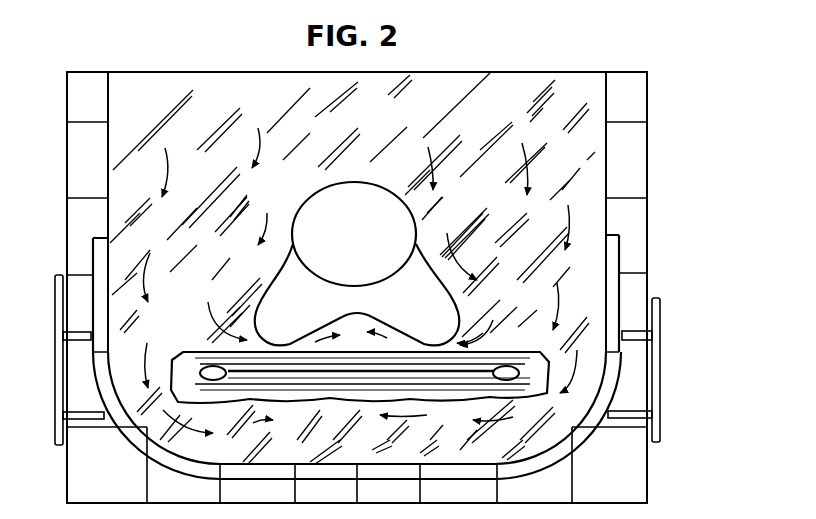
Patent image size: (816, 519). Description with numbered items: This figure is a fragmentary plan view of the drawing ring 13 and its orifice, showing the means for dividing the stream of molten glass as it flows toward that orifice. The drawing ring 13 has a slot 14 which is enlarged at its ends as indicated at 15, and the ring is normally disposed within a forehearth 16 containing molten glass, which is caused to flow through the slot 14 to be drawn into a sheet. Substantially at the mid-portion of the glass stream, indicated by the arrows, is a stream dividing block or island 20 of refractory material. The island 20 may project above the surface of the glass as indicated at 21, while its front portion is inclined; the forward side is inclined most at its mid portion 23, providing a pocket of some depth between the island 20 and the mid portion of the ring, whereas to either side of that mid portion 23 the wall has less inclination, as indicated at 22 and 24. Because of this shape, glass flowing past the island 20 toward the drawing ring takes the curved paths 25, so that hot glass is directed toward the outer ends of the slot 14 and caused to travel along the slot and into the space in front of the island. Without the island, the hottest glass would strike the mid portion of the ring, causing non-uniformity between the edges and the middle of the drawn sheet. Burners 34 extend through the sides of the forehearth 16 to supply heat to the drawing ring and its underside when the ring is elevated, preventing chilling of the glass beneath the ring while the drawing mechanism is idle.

The drawing ring 13 is at (330, 398).
The slot 14 is at (443, 374).
The enlarged ends of slot 15 is at (213, 368).
The forehearth 16 is at (637, 213).
The stream dividing block or island 20 is at (340, 184).
The projecting portion of island 21 is at (352, 211).
The inclined side portion of island 22 is at (295, 290).
The inclined mid portion of island 23 is at (352, 298).
The inclined side portion of island 24 is at (414, 296).
The curved paths of glass flow 25 is at (290, 305).
The burners 34 is at (82, 341).